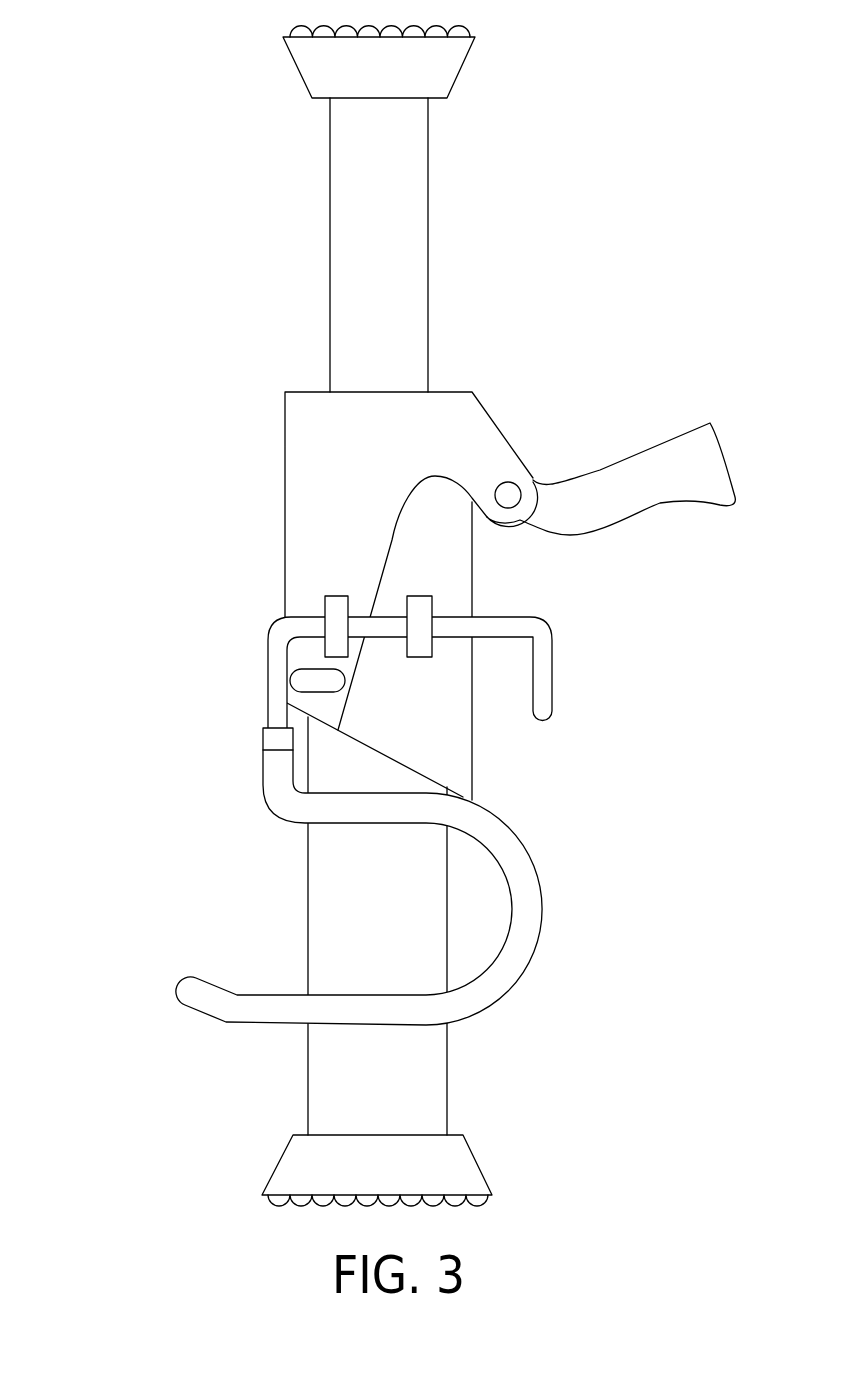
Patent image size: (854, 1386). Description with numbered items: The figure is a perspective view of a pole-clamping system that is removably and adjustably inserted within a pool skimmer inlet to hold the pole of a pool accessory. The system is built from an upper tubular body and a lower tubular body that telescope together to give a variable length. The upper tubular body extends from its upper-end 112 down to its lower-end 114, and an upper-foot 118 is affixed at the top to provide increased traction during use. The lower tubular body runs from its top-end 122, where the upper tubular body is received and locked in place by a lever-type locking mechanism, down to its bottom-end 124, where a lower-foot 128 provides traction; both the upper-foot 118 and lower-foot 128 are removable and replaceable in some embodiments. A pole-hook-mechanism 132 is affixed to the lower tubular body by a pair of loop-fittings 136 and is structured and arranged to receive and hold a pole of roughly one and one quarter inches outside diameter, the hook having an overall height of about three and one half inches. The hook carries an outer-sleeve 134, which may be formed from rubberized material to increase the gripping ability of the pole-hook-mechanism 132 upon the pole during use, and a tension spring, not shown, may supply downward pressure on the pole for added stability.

The upper-end 112 is at (320, 104).
The lower-end 114 is at (323, 388).
The upper-foot 118 is at (305, 72).
The top-end 122 is at (316, 727).
The bottom-end 124 is at (307, 1087).
The lower-foot 128 is at (285, 1153).
The pole-hook-mechanism 132 is at (275, 703).
The outer-sleeve 134 is at (543, 905).
The loop-fittings 136 is at (379, 597).